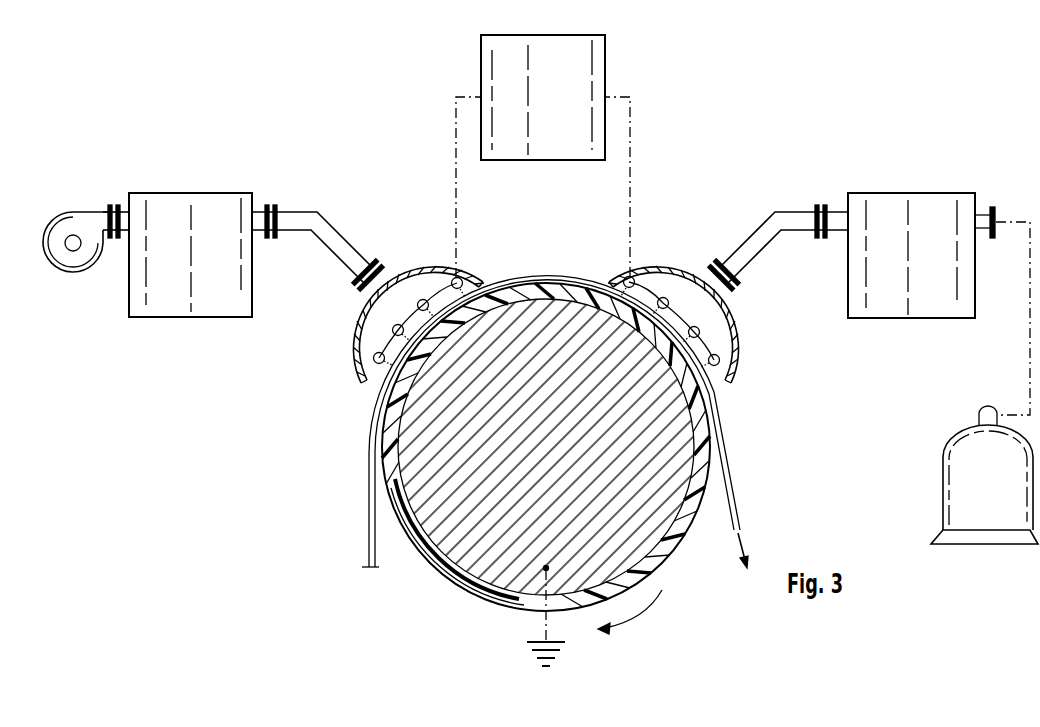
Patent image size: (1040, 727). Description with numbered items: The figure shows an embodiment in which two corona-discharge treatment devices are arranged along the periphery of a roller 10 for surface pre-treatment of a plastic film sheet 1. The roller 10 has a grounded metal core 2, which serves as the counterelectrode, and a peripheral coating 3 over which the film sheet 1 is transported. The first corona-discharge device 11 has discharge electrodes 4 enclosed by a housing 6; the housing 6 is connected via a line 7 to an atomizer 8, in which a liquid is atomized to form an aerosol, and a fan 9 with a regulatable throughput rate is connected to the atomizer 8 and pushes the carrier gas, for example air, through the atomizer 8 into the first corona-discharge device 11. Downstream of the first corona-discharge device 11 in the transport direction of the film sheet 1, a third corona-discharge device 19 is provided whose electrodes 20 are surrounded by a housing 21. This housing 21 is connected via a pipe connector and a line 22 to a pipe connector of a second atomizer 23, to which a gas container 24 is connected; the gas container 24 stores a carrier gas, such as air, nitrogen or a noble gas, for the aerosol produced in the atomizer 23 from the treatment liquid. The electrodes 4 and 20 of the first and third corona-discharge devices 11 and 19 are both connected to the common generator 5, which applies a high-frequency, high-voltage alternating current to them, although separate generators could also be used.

The film sheet 1 is at (740, 491).
The metal core 2 is at (630, 552).
The peripheral coating 3 is at (470, 585).
The discharge electrodes 4 is at (419, 304).
The generator 5 is at (588, 52).
The housing 6 is at (359, 377).
The line 7 is at (298, 216).
The atomizer 8 is at (178, 197).
The fan 9 is at (78, 270).
The roller 10 is at (417, 554).
The first corona-discharge device 11 is at (398, 254).
The third corona-discharge device 19 is at (658, 254).
The electrodes 20 is at (667, 304).
The housing 21 is at (737, 378).
The line 22 is at (790, 216).
The atomizer 23 is at (896, 198).
The gas container 24 is at (991, 520).